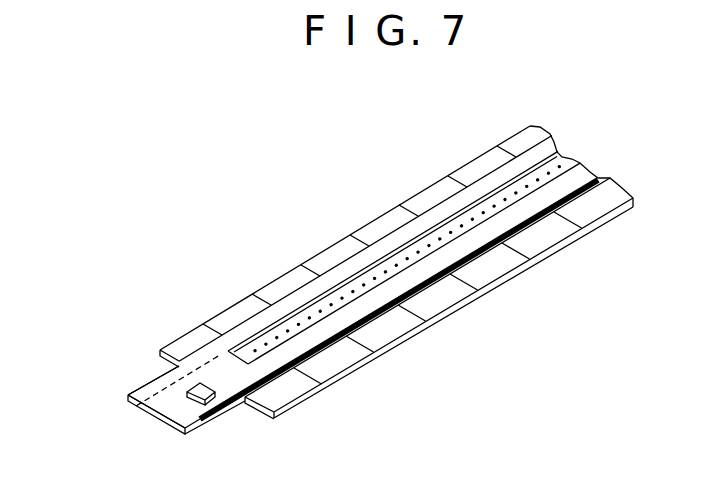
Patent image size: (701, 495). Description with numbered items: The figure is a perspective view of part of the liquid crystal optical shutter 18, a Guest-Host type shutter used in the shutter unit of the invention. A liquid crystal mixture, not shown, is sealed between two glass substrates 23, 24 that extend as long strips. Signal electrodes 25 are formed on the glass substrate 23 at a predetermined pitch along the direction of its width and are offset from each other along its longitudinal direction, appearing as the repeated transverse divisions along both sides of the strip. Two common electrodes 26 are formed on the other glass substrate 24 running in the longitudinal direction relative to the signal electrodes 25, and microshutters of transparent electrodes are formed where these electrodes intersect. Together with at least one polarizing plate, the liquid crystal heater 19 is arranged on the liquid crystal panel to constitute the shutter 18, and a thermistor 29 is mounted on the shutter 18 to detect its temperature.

The liquid crystal optical shutter 18 is at (409, 196).
The liquid crystal heater 19 is at (216, 396).
The glass substrate 23 is at (263, 414).
The glass substrate 24 is at (130, 405).
The signal electrodes 25 is at (257, 300).
The common electrodes 26 is at (162, 385).
The thermistor 29 is at (172, 405).